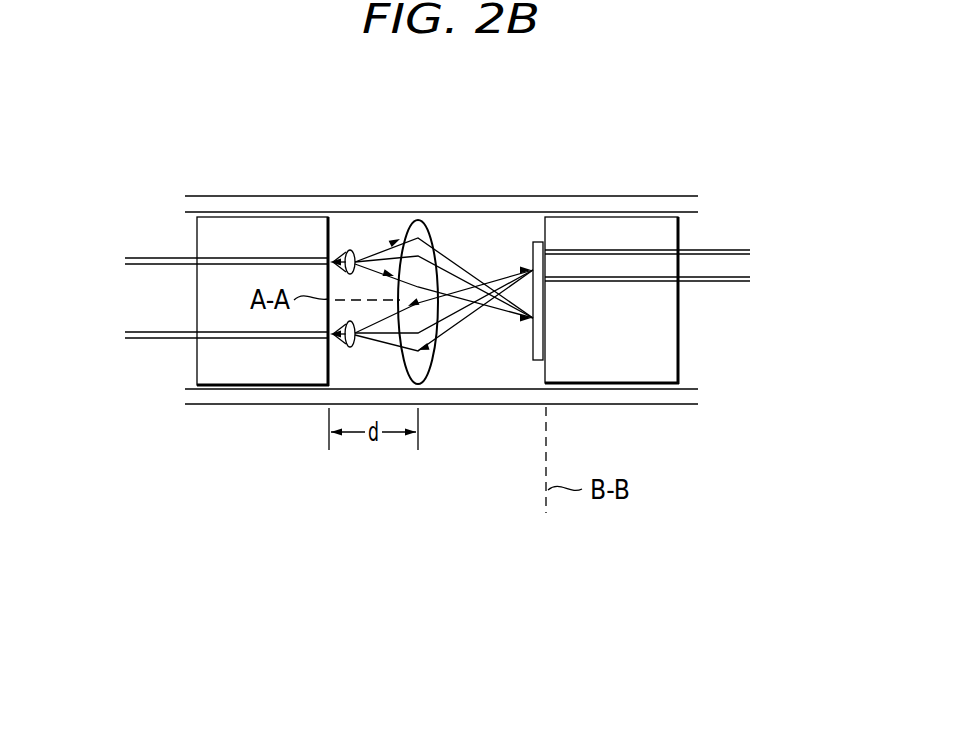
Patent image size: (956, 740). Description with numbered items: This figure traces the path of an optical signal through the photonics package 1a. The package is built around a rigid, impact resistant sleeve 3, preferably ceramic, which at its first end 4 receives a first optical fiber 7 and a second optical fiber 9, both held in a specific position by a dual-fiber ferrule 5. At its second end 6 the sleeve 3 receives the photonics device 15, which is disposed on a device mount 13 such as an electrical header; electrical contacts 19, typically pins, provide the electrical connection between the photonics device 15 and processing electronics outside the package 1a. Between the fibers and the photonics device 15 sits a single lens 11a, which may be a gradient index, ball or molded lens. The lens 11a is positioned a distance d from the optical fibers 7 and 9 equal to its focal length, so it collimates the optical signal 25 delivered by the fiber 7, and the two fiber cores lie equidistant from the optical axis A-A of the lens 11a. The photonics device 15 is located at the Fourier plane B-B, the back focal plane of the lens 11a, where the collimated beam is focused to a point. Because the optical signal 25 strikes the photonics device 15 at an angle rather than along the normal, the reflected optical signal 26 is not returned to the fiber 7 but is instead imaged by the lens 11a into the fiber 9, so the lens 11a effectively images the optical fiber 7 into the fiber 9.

The photonics package 1a is at (618, 118).
The sleeve 3 is at (528, 212).
The first end 4 is at (183, 395).
The dual-fiber ferrule 5 is at (218, 237).
The second end 6 is at (700, 397).
The first optical fiber 7 is at (137, 258).
The second optical fiber 9 is at (140, 332).
The lens 11a is at (419, 221).
The device mount 13 is at (672, 338).
The photonics device 15 is at (540, 360).
The electrical contacts 19 is at (733, 248).
The optical signal 25 is at (348, 250).
The reflected optical signal 26 is at (352, 348).